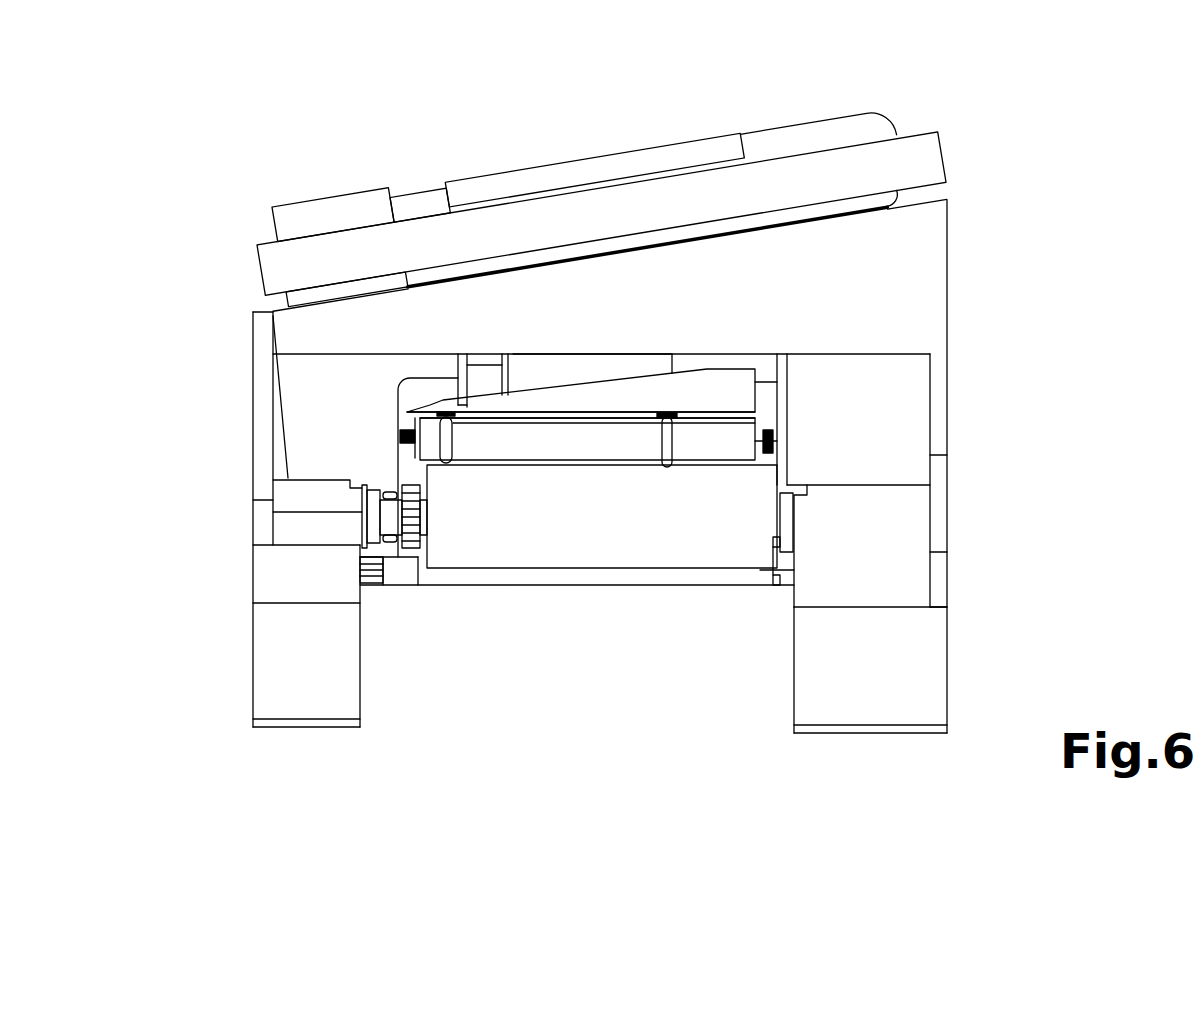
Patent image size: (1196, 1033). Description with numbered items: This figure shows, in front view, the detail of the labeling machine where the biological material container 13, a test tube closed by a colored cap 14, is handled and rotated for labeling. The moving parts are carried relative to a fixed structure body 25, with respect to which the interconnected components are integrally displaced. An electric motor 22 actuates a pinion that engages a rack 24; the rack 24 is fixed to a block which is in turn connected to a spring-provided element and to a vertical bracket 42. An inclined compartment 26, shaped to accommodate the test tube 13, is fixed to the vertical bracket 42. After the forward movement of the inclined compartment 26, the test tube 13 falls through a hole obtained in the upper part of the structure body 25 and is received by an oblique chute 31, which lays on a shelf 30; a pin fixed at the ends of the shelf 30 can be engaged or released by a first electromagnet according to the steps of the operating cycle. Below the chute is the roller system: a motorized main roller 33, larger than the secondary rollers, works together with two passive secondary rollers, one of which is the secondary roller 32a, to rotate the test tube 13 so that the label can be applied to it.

The biological material container 13 is at (843, 135).
The colored cap 14 is at (333, 213).
The electric motor 22 is at (707, 364).
The rack 24 is at (483, 383).
The fixed structure body 25 is at (843, 260).
The inclined compartment 26 is at (427, 242).
The shelf 30 is at (487, 418).
The oblique chute 31 is at (697, 398).
The passive secondary roller 32a is at (528, 437).
The motorized main roller 33 is at (605, 505).
The vertical bracket 42 is at (579, 372).